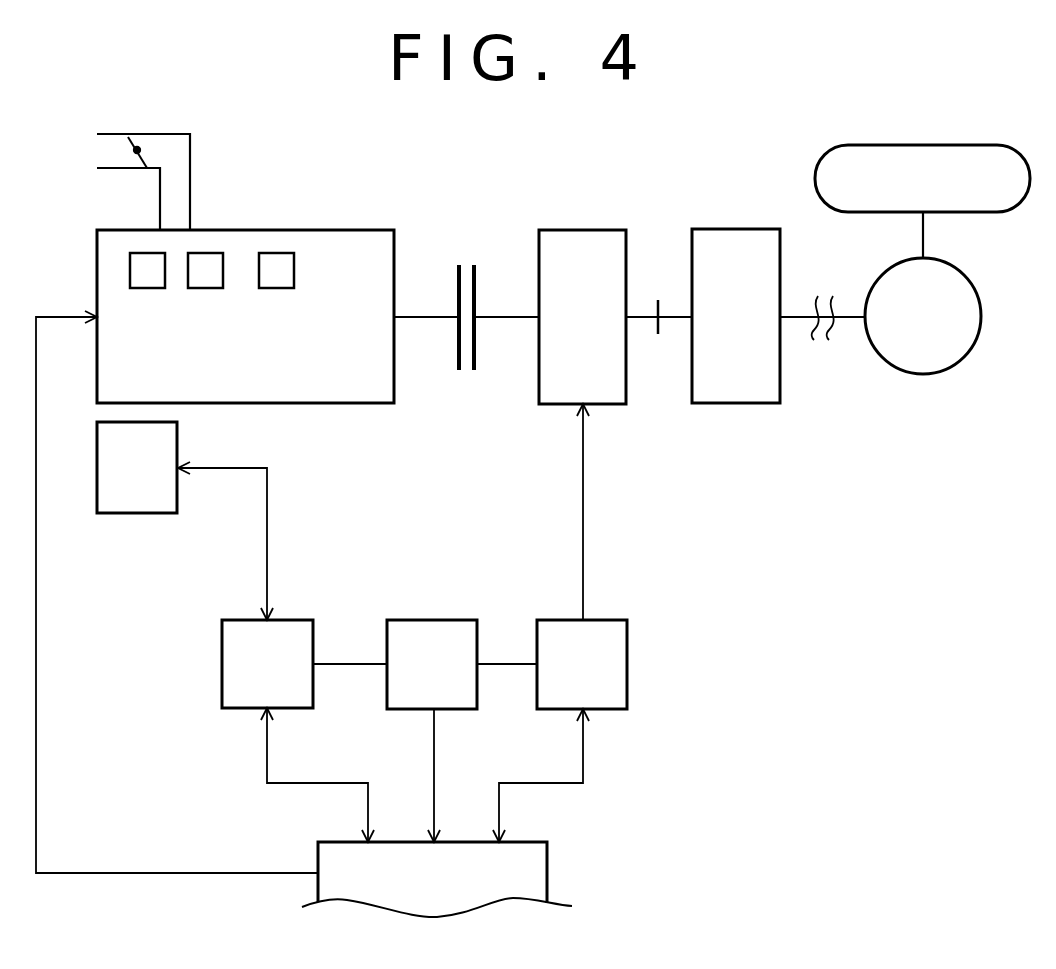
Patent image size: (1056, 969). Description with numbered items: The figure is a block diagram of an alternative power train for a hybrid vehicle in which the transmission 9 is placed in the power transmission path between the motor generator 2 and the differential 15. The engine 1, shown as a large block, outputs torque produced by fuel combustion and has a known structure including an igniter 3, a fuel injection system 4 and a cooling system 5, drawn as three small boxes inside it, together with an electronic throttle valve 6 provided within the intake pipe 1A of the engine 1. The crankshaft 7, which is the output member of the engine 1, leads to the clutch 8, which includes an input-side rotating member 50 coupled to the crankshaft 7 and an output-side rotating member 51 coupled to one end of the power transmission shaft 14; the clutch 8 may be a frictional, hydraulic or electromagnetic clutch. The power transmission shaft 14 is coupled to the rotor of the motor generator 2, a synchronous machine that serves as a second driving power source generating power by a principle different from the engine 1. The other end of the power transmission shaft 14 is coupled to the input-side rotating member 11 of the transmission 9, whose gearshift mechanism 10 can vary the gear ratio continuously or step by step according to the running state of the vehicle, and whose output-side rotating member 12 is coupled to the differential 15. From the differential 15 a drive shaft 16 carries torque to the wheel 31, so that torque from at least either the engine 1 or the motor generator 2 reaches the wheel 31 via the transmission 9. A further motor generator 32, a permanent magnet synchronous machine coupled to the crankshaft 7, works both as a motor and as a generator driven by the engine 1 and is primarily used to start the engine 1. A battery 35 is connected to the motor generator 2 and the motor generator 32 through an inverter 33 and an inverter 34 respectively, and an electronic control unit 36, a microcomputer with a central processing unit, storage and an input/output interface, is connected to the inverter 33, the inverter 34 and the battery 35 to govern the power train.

The engine 1 is at (252, 227).
The intake pipe 1A is at (122, 134).
The electronic throttle valve 6 is at (140, 160).
The igniter 3 is at (145, 278).
The fuel injection system 4 is at (203, 278).
The cooling system 5 is at (274, 278).
The crankshaft 7 is at (428, 320).
The clutch 8 is at (445, 272).
The input-side rotating member 50 is at (459, 365).
The output-side rotating member 51 is at (476, 285).
The power transmission shaft 14 is at (508, 320).
The motor generator 2 is at (568, 400).
The input-side rotating member 11 is at (677, 313).
The gearshift mechanism 10 is at (755, 396).
The output-side rotating member 12 is at (795, 311).
The differential 15 is at (916, 370).
The drive shaft 16 is at (926, 236).
The wheel 31 is at (920, 150).
The transmission 9 is at (702, 445).
The motor generator 32 is at (137, 504).
The inverter 33 is at (282, 630).
The battery 35 is at (434, 628).
The inverter 34 is at (605, 647).
The electronic control unit 36 is at (530, 867).